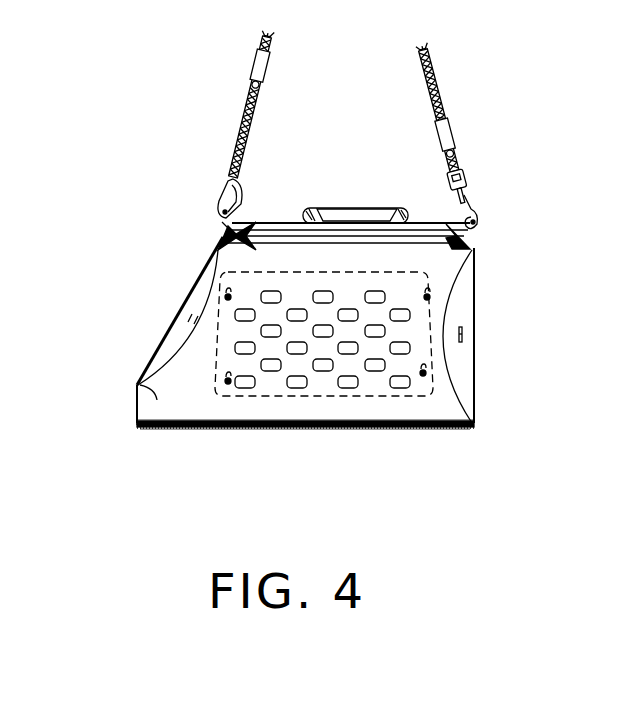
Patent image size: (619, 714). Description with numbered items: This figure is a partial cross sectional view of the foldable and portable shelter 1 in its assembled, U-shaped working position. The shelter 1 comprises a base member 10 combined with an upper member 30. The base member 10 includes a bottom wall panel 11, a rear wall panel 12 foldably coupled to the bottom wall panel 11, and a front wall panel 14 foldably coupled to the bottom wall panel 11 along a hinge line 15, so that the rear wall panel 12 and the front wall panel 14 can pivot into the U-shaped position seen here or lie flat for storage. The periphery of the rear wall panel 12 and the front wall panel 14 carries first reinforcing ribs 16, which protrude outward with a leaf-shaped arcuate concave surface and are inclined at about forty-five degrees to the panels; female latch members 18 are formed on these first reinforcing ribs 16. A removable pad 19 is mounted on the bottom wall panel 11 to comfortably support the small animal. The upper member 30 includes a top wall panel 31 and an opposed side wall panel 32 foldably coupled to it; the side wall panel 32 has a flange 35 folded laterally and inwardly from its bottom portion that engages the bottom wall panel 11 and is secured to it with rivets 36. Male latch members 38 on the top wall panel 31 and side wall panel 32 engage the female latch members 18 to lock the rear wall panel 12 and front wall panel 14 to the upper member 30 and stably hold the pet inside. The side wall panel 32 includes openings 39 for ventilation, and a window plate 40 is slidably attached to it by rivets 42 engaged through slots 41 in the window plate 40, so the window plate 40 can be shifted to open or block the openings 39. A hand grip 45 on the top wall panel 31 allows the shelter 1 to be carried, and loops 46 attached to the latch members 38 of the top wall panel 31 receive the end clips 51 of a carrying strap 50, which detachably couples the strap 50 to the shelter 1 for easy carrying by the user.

The foldable and portable shelter 1 is at (138, 166).
The base member 10 is at (478, 388).
The bottom wall panel 11 is at (313, 430).
The rear wall panel 12 is at (476, 317).
The front wall panel 14 is at (160, 345).
The hinge line 15 is at (139, 430).
The first reinforcing rib 16 is at (466, 357).
The female latch member 18 is at (222, 236).
The pad 19 is at (270, 430).
The upper member 30 is at (420, 221).
The top wall panel 31 is at (283, 222).
The side wall panel 32 is at (138, 385).
The flange 35 is at (186, 430).
The rivet 36 is at (228, 430).
The male latch member 38 is at (472, 240).
The opening 39 is at (380, 334).
The window plate 40 is at (365, 397).
The slot 41 is at (224, 295).
The rivet 42 is at (424, 377).
The hand grip 45 is at (358, 210).
The loop 46 is at (227, 230).
The carrying strap 50 is at (243, 118).
The end clip 51 is at (220, 194).